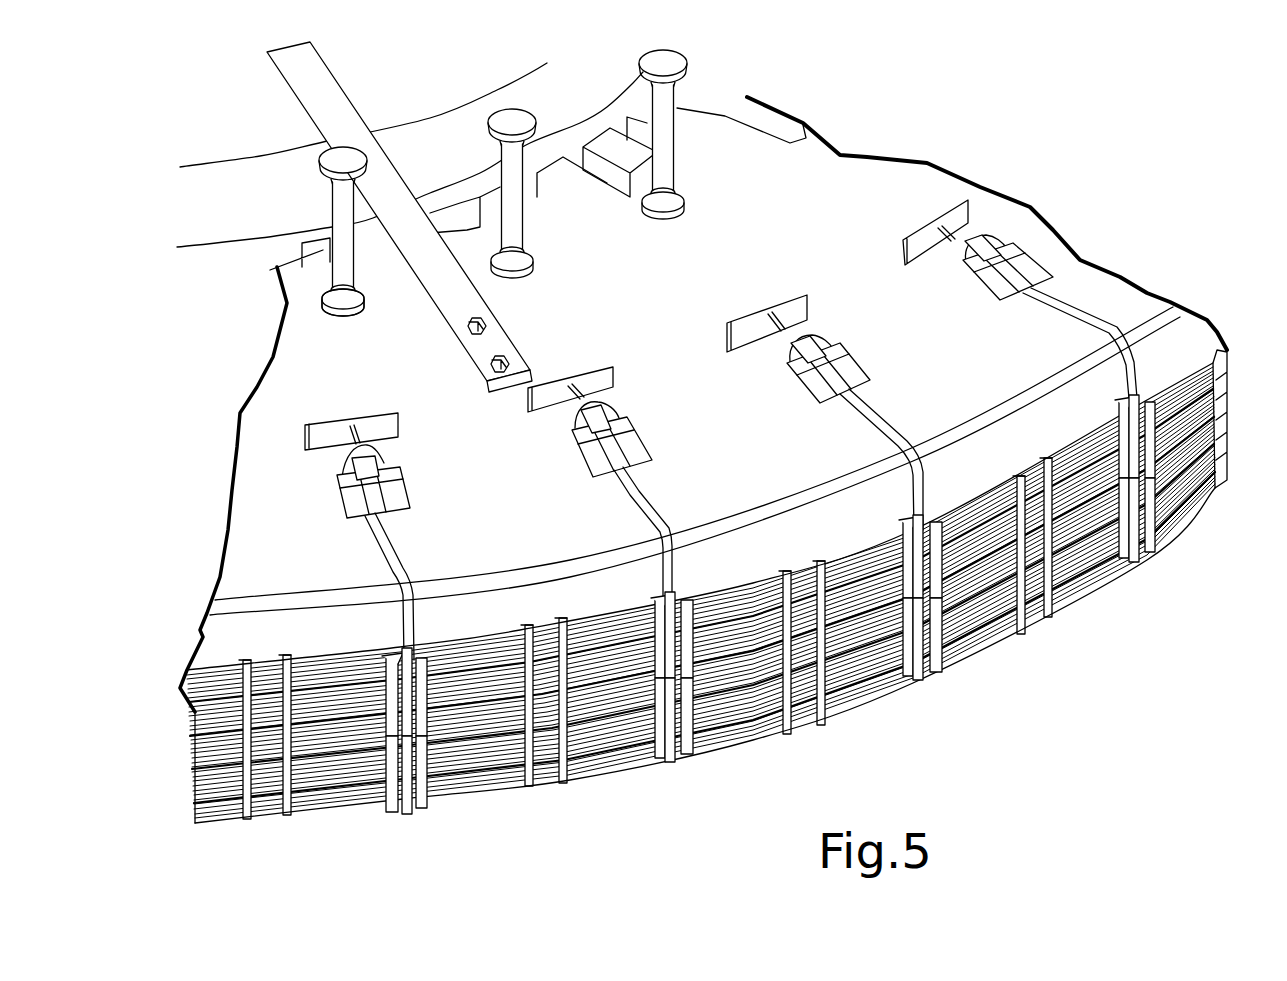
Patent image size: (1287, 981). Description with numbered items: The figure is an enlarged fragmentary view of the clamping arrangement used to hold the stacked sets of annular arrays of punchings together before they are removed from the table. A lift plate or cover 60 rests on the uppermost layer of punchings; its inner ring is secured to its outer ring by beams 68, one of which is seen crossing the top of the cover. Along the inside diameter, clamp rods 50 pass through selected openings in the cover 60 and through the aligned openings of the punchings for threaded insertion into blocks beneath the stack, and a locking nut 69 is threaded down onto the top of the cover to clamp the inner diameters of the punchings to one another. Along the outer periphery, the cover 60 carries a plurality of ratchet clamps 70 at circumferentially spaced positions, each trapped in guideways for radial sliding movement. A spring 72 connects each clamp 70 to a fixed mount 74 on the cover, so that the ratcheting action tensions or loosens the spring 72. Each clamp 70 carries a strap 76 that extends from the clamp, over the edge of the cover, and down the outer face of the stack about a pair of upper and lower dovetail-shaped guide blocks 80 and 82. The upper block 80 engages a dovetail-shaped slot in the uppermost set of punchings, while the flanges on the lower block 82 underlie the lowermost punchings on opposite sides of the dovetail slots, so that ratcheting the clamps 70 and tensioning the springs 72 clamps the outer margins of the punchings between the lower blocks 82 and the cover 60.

The rod 50 is at (331, 203).
The lift plate or cover 60 is at (295, 407).
The beams 68 is at (284, 74).
The locking nut 69 is at (323, 302).
The ratchet clamp 70 is at (388, 468).
The spring 72 is at (348, 436).
The fixed mount 74 is at (384, 413).
The straps 76 is at (388, 553).
The upper dovetail-shaped guide block 80 is at (393, 657).
The lower dovetail-shaped guide block 82 is at (400, 813).